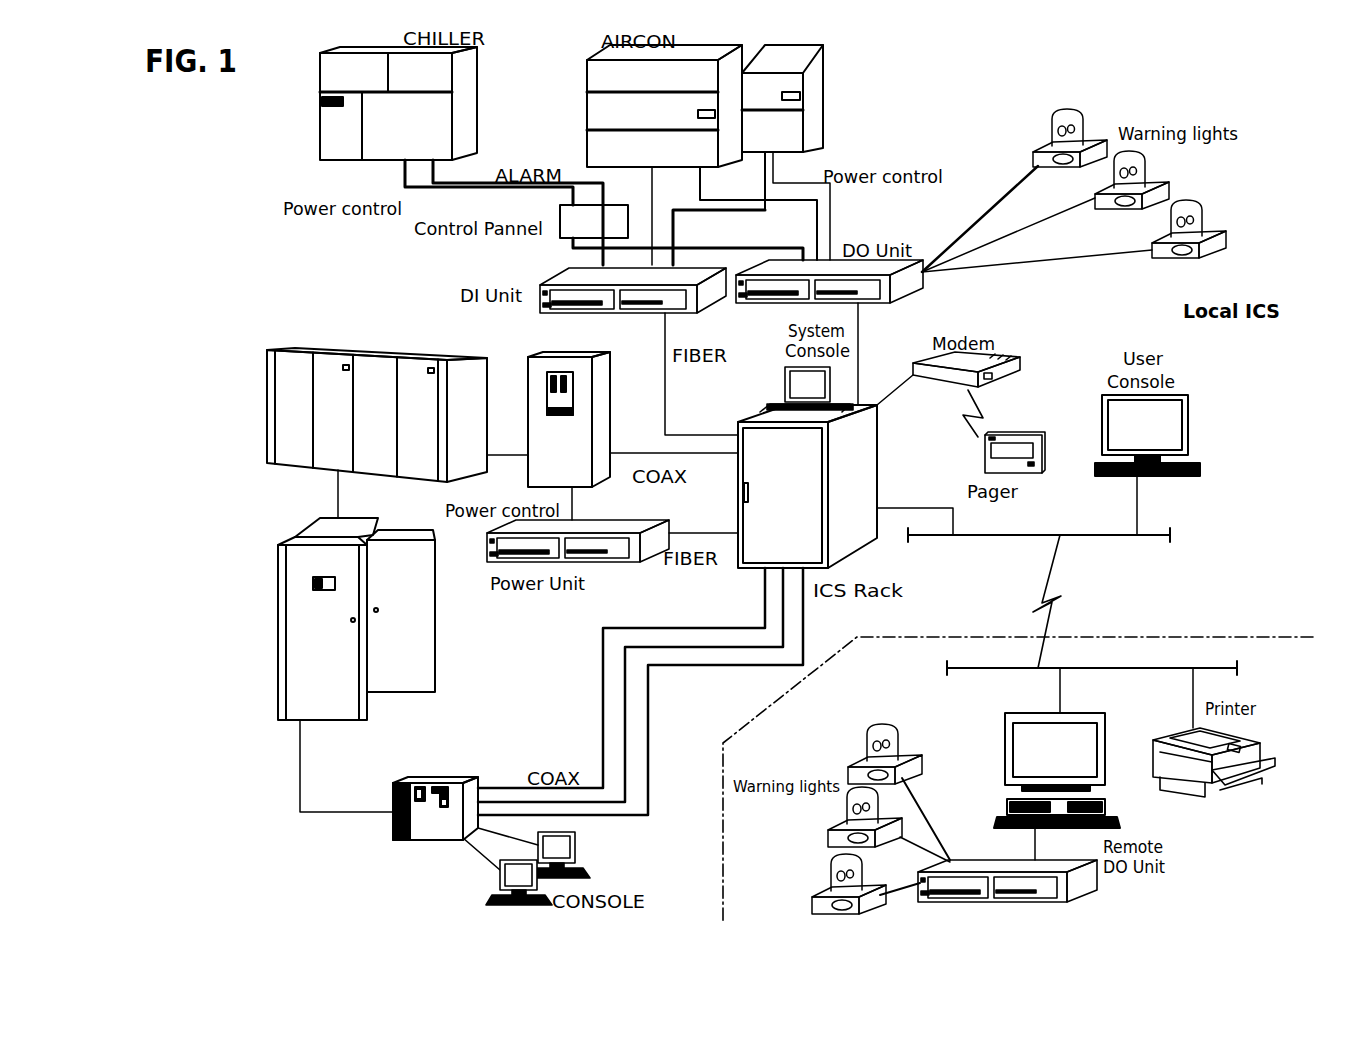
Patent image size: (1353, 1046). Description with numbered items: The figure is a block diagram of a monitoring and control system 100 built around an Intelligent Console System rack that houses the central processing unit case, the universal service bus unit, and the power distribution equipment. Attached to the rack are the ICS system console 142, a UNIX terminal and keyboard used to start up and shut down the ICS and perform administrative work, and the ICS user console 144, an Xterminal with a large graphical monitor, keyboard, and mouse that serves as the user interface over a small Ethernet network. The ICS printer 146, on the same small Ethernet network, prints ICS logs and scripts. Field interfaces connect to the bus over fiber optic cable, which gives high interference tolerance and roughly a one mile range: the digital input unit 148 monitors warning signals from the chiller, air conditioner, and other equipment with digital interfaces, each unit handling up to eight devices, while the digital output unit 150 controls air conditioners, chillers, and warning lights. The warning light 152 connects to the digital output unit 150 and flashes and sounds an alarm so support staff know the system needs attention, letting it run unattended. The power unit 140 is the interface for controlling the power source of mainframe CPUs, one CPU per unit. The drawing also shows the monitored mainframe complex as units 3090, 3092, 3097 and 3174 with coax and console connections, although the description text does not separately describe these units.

The monitoring and control system 100 is at (848, 528).
The power unit 140 is at (598, 556).
The ICS system console 142 is at (785, 378).
The ICS user console 144 is at (1103, 402).
The ICS printer 146 is at (1245, 736).
The digital input (DI) unit 148 is at (578, 279).
The digital output (DO) unit 150 is at (902, 278).
The warning light 152 is at (1068, 110).
The IBM 3090 mainframe processor 3090 is at (356, 610).
The IBM 3092 processor controller 3092 is at (569, 411).
The IBM 3097 power and coolant distribution unit 3097 is at (377, 409).
The IBM 3174 establishment controller 3174 is at (435, 801).